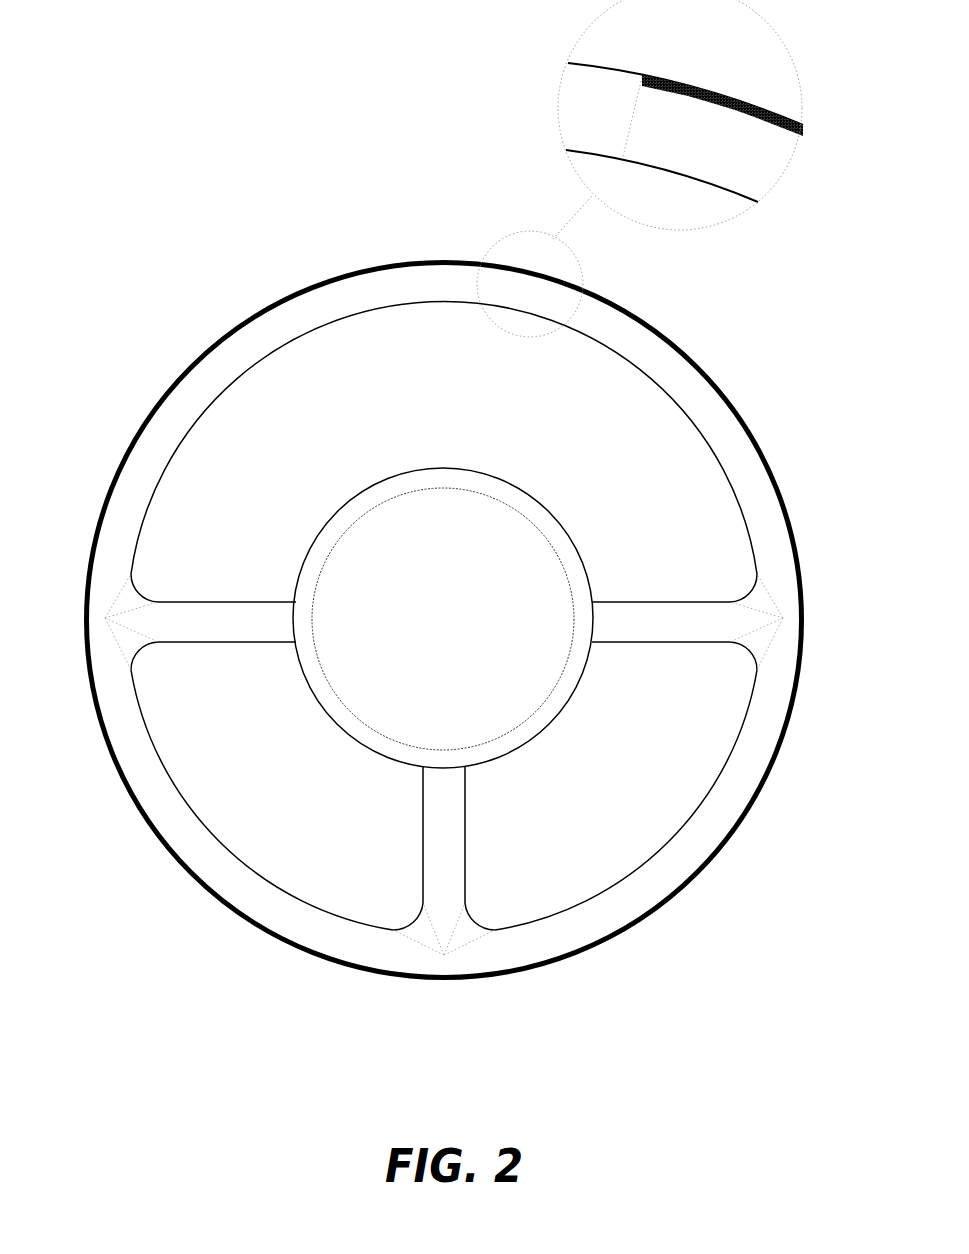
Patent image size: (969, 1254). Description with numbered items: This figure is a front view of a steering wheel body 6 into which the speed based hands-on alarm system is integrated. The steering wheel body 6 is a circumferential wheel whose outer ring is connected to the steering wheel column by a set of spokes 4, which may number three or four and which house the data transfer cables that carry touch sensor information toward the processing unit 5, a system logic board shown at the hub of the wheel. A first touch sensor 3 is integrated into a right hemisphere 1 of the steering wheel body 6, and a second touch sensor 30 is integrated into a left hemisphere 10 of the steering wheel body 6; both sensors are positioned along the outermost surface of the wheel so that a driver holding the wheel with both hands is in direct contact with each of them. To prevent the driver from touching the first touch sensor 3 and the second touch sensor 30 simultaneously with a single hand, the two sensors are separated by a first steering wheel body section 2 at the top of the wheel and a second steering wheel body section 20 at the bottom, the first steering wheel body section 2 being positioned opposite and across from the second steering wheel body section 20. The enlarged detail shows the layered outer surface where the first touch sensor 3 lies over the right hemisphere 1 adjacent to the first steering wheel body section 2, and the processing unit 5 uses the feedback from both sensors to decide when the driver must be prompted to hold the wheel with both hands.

The right hemisphere 1 is at (566, 942).
The first steering wheel body section 2 is at (443, 261).
The first touch sensor 3 is at (808, 621).
The set of spokes 4 is at (256, 615).
The processing unit 5 is at (471, 514).
The steering wheel body 6 is at (446, 530).
The left hemisphere 10 is at (468, 509).
The second steering wheel body section 20 is at (443, 979).
The second touch sensor 30 is at (79, 621).